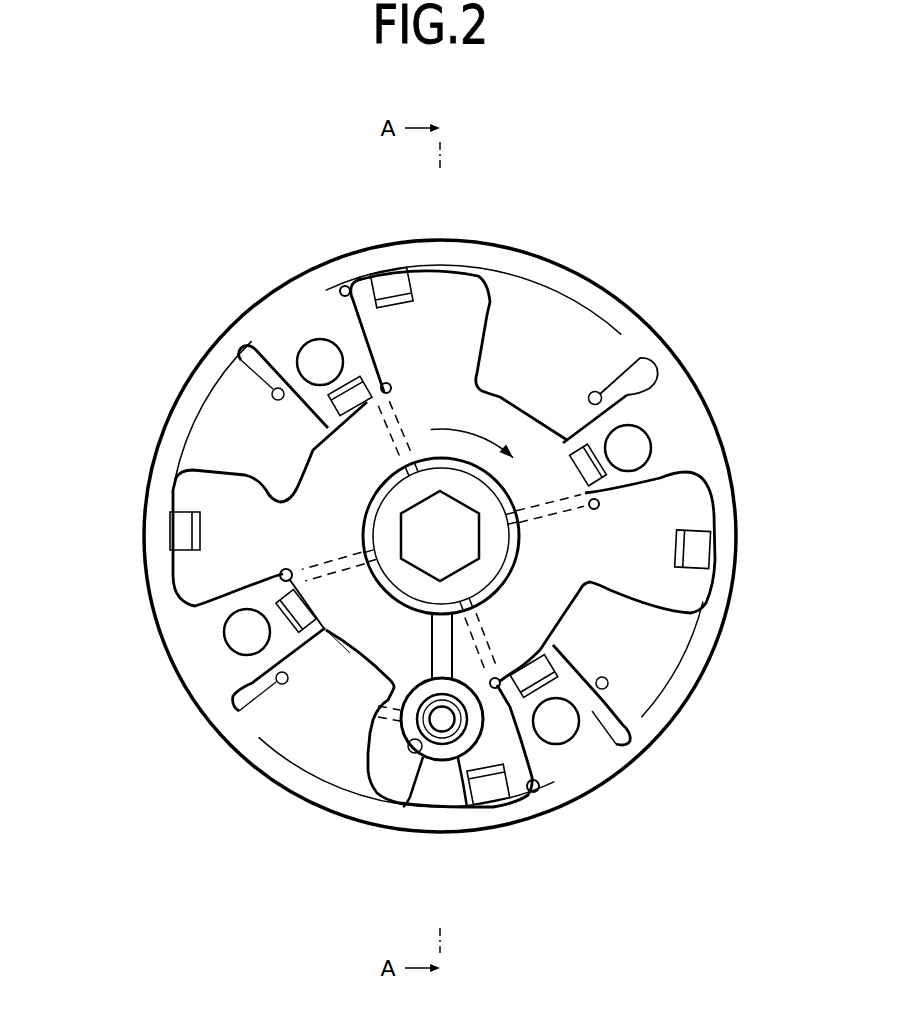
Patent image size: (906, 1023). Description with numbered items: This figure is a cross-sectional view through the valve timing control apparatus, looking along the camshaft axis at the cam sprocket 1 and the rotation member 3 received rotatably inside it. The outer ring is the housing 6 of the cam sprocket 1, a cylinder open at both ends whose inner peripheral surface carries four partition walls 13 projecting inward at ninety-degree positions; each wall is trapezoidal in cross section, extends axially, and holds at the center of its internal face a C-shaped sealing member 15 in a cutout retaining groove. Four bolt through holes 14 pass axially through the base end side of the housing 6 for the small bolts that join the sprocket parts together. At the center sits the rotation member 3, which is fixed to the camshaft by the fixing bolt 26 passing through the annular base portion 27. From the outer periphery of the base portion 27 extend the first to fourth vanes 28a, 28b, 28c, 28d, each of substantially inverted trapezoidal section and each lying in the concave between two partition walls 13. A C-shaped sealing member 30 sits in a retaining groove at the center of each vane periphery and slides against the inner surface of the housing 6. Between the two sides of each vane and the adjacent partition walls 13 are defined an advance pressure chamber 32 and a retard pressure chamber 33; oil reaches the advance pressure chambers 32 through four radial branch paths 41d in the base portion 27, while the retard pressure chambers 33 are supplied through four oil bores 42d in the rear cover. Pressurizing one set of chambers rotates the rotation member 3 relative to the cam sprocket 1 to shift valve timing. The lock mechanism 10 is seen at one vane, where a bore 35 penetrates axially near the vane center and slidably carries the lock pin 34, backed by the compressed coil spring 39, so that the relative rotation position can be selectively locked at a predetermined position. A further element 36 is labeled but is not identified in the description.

The cam sprocket 1 is at (563, 264).
The rotation member 3 is at (586, 607).
The housing 6 is at (603, 286).
The lock mechanism 10 is at (488, 727).
The partition walls 13 is at (287, 367).
The bolt through holes 14 is at (317, 353).
The sealing member 15 is at (648, 413).
The fixing bolt 26 is at (495, 505).
The base portion 27 is at (347, 643).
The first vane 28a is at (365, 800).
The second vane 28b is at (455, 300).
The third vane 28c is at (688, 587).
The fourth vane 28d is at (183, 565).
The sealing members 30 is at (390, 290).
The advance pressure chamber 32 is at (344, 284).
The retard pressure chamber 33 is at (229, 451).
The lock pin 34 is at (436, 765).
The bore 35 is at (413, 754).
The boss 36 is at (366, 754).
The coil spring 39 is at (460, 748).
The branch paths 41d is at (395, 452).
The oil bores 42d is at (272, 390).